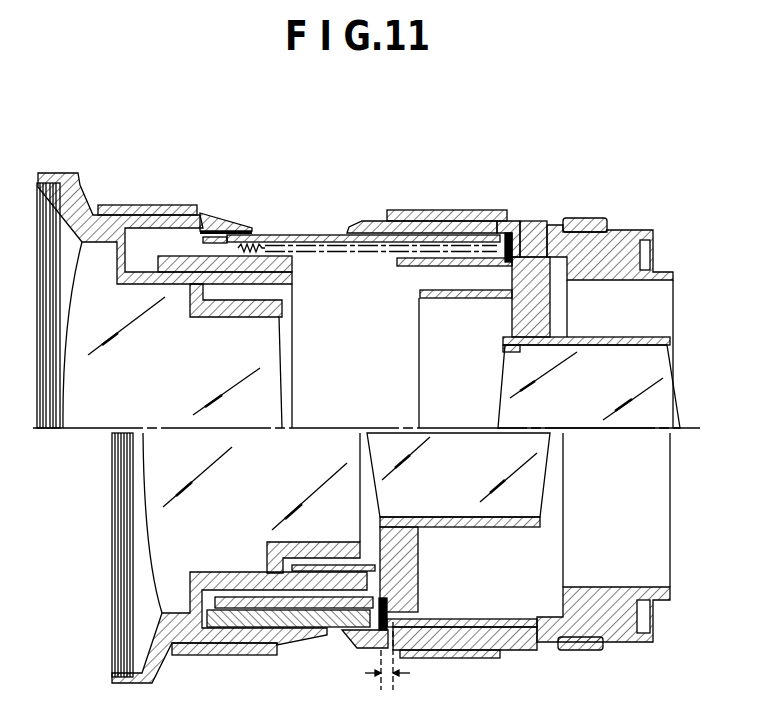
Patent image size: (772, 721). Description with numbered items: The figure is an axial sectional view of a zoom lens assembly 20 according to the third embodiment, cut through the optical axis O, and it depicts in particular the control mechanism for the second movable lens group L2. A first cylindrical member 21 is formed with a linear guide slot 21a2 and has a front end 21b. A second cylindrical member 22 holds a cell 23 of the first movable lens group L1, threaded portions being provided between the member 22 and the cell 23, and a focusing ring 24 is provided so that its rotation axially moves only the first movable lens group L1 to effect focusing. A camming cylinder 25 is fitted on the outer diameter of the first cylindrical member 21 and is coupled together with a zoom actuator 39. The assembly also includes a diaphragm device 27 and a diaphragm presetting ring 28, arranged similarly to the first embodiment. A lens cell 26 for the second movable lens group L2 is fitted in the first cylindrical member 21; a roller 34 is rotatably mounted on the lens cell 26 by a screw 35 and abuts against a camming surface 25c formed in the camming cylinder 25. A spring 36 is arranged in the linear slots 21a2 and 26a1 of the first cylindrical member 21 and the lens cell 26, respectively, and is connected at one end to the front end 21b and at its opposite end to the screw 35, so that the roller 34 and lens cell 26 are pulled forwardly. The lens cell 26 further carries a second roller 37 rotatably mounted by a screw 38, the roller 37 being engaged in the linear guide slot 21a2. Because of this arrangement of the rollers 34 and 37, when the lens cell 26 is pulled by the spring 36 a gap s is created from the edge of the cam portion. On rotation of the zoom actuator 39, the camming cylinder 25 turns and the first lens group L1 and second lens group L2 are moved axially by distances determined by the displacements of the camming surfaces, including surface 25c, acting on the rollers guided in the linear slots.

The lens barrel assembly 20 is at (351, 206).
The first cylindrical member 21 is at (557, 240).
The linear guide slot 21a2 is at (282, 238).
The front end of the first cylindrical member 21b is at (210, 214).
The second cylindrical member 22 is at (225, 262).
The cell of the first movable lens group 23 is at (277, 313).
The focusing ring 24 is at (150, 213).
The camming cylinder 25 is at (433, 225).
The camming surface 25c is at (497, 223).
The lens cell of the second movable lens group 26 is at (537, 308).
The linear slot 26a1 is at (491, 266).
The diaphragm device 27 is at (400, 535).
The diaphragm presetting ring 28 is at (593, 220).
The roller 34 is at (528, 222).
The screw 35 is at (510, 232).
The spring 36 is at (257, 246).
The second roller 37 is at (363, 640).
The screw 38 is at (387, 605).
The zoom actuator 39 is at (400, 210).
The first movable lens group L1 is at (83, 335).
The second movable lens group L2 is at (607, 380).
The optical axis O is at (366, 431).
The clearance s is at (387, 660).